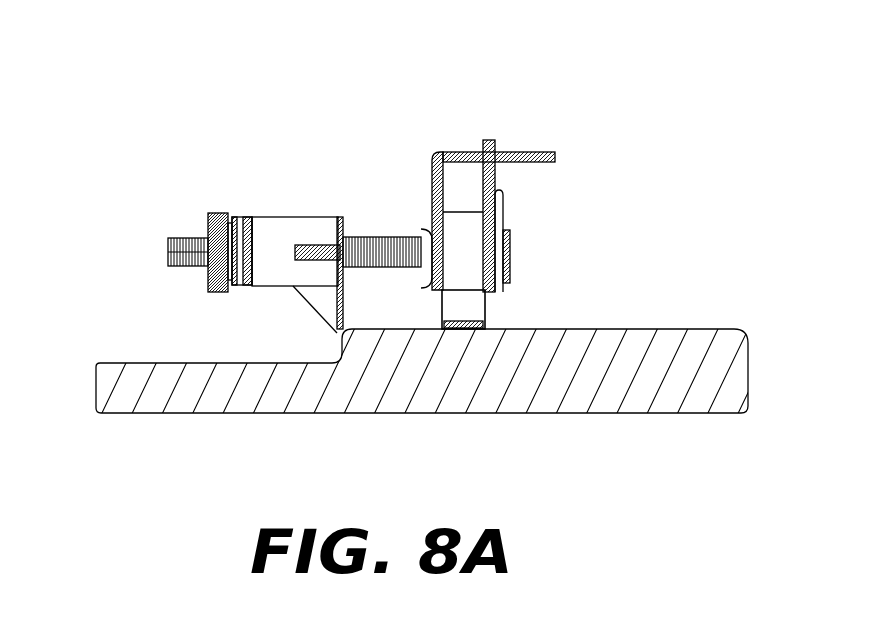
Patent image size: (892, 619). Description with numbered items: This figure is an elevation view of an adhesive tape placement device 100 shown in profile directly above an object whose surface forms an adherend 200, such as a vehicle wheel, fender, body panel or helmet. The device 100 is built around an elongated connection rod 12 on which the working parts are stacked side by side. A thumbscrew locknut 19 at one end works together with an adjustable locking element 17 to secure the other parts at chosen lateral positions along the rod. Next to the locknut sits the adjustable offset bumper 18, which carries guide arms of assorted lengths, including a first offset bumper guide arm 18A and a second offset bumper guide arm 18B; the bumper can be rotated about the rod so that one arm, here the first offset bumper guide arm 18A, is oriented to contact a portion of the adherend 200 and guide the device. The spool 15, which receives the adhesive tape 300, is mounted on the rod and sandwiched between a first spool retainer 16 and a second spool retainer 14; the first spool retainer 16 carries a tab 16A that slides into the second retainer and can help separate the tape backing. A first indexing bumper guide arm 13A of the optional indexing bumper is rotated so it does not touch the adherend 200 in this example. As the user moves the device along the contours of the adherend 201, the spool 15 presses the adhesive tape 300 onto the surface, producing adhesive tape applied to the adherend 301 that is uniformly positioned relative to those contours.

The adhesive tape placement device 100 is at (233, 108).
The elongated connection rod 12 is at (172, 245).
The thumbscrew locknut 19 is at (210, 282).
The adjustable offset bumper 18 is at (263, 220).
The first offset bumper guide arm 18A is at (325, 304).
The second offset bumper guide arm 18B is at (312, 250).
The spool 15 is at (382, 224).
The adjustable locking element 17 is at (428, 265).
The first spool retainer 16 is at (434, 185).
The tab 16A is at (538, 158).
The second spool retainer 14 is at (492, 168).
The first indexing bumper guide arm 13A is at (503, 208).
The adhesive tape 300 is at (474, 302).
The adhesive tape applied to the adherend 301 is at (478, 325).
The adherend 200 is at (643, 433).
The contours of the adherend 201 is at (460, 330).